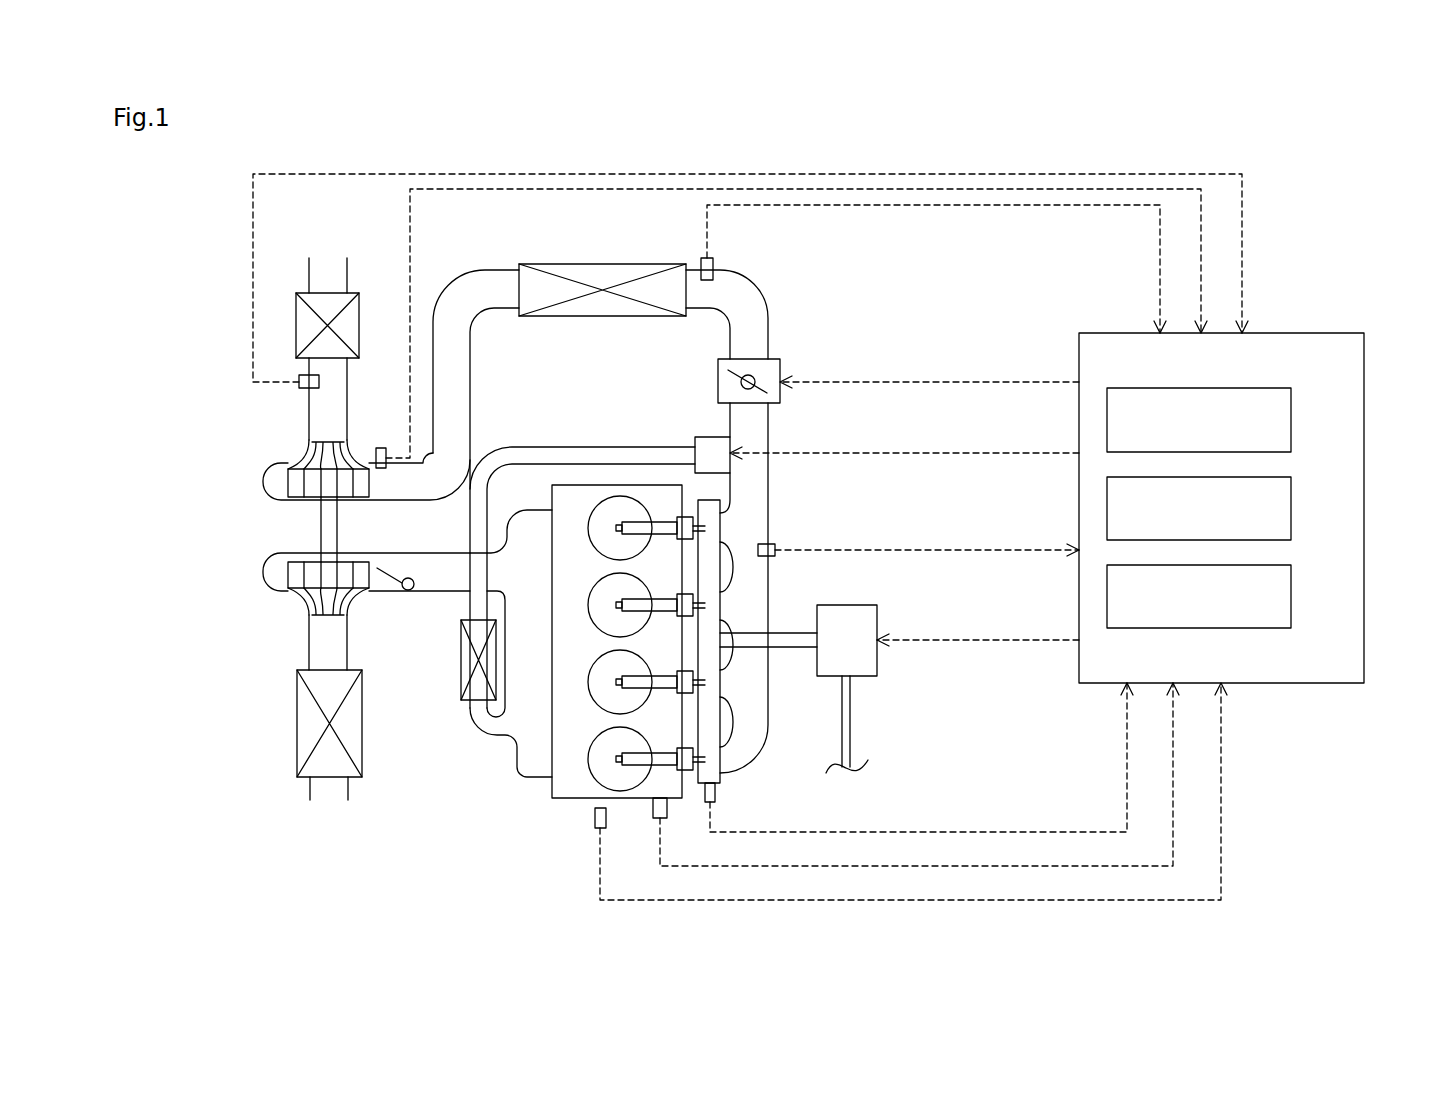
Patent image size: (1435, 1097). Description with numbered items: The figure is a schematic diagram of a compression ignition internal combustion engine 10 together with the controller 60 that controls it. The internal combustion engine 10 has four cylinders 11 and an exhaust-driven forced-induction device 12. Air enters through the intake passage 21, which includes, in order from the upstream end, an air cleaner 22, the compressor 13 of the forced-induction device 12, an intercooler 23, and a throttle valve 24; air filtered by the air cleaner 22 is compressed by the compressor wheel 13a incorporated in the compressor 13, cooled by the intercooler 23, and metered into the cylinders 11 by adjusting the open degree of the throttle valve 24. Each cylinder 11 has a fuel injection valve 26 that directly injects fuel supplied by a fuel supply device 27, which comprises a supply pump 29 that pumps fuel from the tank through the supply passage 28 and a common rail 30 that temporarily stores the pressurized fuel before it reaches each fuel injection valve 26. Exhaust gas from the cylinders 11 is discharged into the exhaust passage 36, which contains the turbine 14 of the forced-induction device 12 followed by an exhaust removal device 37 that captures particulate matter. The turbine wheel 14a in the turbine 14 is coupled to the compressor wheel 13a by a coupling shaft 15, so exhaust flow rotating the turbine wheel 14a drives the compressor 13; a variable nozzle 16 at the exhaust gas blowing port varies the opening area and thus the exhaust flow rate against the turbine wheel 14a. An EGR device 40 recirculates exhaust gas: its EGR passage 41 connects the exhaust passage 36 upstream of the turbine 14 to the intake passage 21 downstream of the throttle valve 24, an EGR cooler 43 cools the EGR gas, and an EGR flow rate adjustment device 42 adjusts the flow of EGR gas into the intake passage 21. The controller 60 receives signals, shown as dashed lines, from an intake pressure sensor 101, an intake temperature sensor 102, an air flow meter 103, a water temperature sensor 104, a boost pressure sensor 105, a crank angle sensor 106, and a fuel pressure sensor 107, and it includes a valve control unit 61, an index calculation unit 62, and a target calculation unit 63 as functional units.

The internal combustion engine 10 is at (486, 845).
The cylinders 11 is at (588, 560).
The exhaust-driven forced-induction device 12 is at (325, 534).
The compressor 13 is at (263, 483).
The compressor wheel 13a is at (292, 458).
The turbine 14 is at (263, 575).
The turbine wheel 14a is at (300, 600).
The coupling shaft 15 is at (321, 527).
The variable nozzle 16 is at (397, 575).
The intake passage 21 is at (470, 390).
The air cleaner 22 is at (387, 312).
The intercooler 23 is at (610, 316).
The throttle valve 24 is at (762, 360).
The fuel injection valves 26 is at (662, 745).
The fuel supply device 27 is at (899, 689).
The supply passage 28 is at (853, 722).
The supply pump 29 is at (877, 660).
The common rail 30 is at (735, 763).
The exhaust passage 36 is at (432, 593).
The exhaust removal device 37 is at (297, 718).
The EGR device 40 is at (471, 643).
The EGR passage 41 is at (610, 447).
The EGR flow rate adjustment device 42 is at (700, 437).
The EGR cooler 43 is at (461, 665).
The controller 60 is at (1249, 508).
The valve control unit 61 is at (1291, 418).
The index calculation unit 62 is at (1291, 507).
The target calculation unit 63 is at (1291, 595).
The intake pressure sensor 101 is at (768, 544).
The intake temperature sensor 102 is at (713, 262).
The air flow meter 103 is at (299, 383).
The water temperature sensor 104 is at (660, 825).
The boost pressure sensor 105 is at (381, 448).
The crank angle sensor 106 is at (595, 818).
The fuel pressure sensor 107 is at (715, 792).